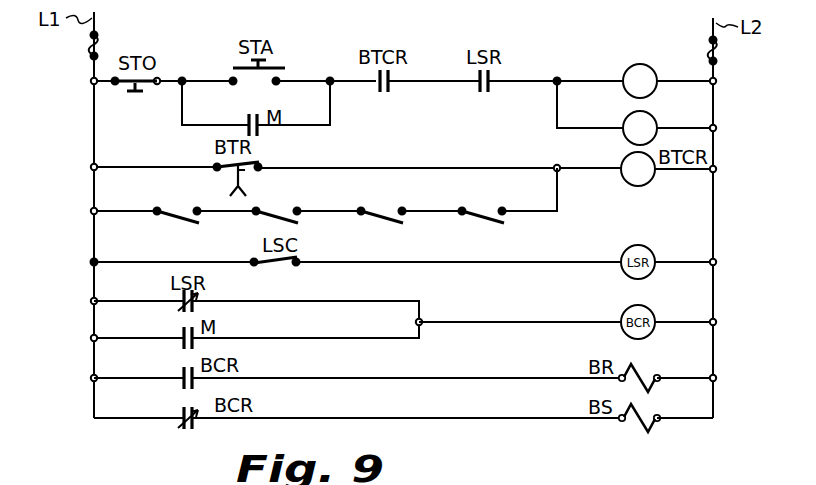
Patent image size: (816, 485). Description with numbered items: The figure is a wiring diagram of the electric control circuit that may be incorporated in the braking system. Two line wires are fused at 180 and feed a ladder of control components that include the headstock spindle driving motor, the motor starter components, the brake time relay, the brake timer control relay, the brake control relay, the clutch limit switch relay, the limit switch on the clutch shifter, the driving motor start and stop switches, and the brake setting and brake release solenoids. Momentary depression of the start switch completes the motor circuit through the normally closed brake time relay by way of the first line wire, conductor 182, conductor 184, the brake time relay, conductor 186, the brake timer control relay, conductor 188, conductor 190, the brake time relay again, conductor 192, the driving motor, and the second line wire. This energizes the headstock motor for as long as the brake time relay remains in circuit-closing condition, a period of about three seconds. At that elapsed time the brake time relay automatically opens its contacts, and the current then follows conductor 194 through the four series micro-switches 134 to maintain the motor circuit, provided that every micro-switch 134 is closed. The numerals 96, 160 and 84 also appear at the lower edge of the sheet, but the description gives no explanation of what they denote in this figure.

The fuses 180 is at (90, 46).
The conductor 182 is at (92, 132).
The conductor 184 is at (143, 165).
The conductor 186 is at (606, 165).
The conductor 188 is at (716, 148).
The conductor 190 is at (700, 127).
The conductor 192 is at (606, 80).
The conductor 194 is at (130, 197).
The micro-switches 134 is at (476, 224).
The element 96 is at (555, 484).
The element 160 is at (629, 484).
The element 84 is at (672, 484).